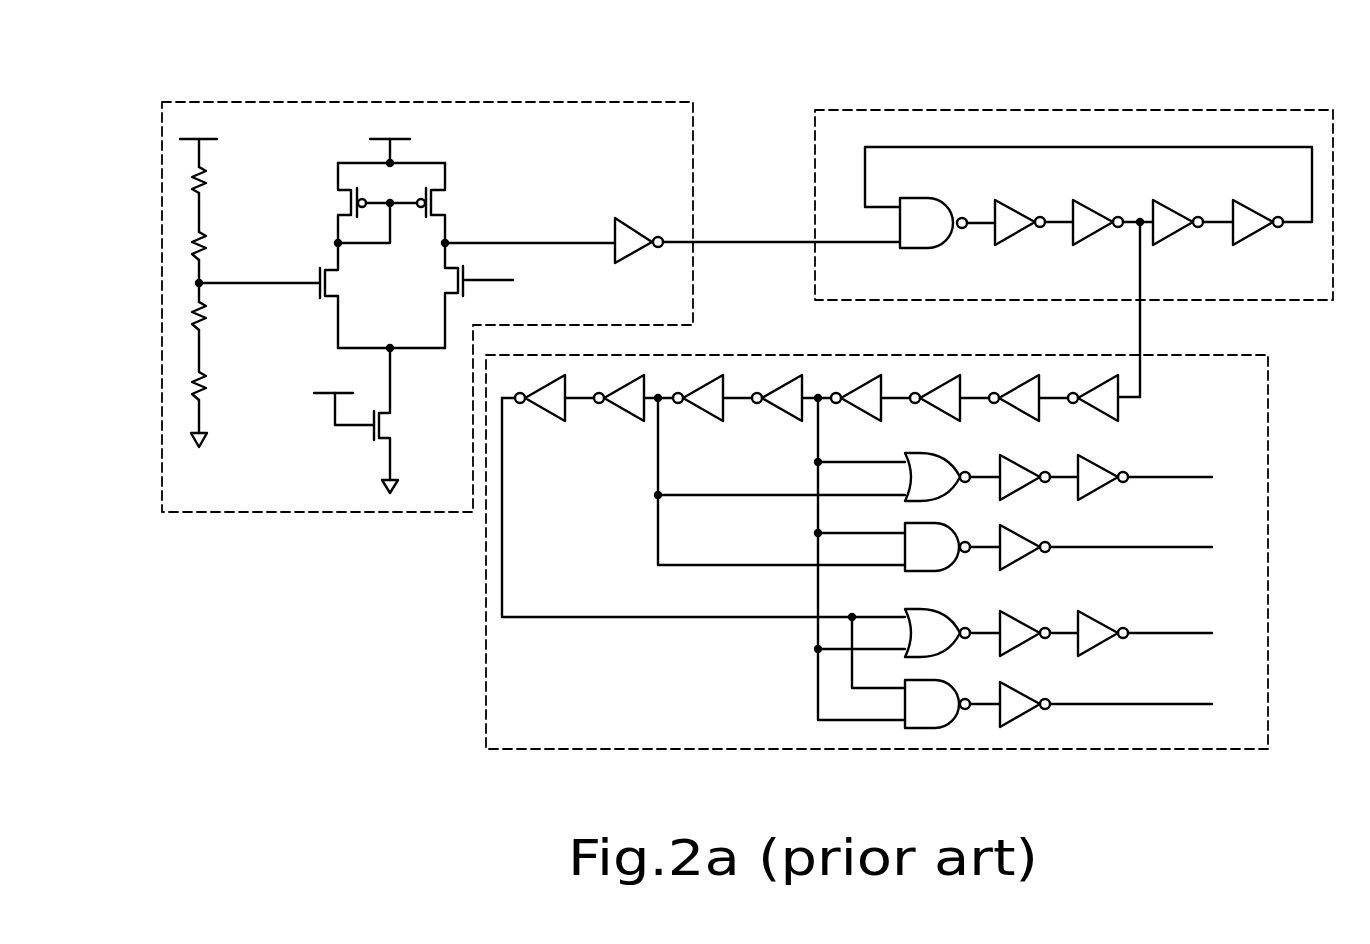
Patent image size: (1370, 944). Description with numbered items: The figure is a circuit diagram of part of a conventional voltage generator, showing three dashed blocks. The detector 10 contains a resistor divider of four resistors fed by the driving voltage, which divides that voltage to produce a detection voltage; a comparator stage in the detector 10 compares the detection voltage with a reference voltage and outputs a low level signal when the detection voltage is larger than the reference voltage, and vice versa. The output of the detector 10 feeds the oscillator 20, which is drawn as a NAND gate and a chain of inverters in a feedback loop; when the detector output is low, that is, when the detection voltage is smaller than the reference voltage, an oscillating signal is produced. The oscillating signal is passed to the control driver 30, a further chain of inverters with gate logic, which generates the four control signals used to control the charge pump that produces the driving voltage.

The detector 10 is at (564, 101).
The oscillator 20 is at (1073, 108).
The control driver 30 is at (486, 667).